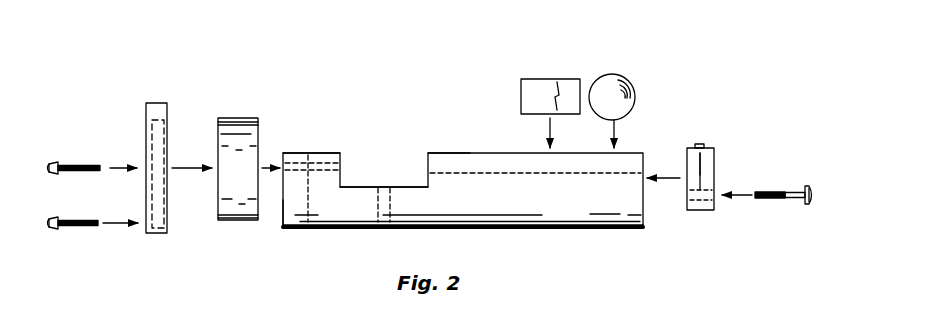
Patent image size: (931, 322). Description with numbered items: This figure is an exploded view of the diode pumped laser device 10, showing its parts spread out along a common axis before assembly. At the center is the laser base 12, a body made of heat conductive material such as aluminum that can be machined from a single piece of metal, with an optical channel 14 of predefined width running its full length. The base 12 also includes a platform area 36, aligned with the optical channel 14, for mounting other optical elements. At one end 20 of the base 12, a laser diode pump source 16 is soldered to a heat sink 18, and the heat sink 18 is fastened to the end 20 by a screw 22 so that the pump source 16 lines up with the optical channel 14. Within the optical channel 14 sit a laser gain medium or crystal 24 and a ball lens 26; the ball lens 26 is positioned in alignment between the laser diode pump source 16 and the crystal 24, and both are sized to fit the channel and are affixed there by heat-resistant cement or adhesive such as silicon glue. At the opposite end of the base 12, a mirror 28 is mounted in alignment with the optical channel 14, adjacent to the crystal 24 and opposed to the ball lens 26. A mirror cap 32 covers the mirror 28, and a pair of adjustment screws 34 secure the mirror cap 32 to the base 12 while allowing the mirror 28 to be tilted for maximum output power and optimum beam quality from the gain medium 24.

The diode pumped laser device 10 is at (289, 102).
The laser base 12 is at (556, 208).
The optical channel 14 is at (347, 168).
The laser diode pump source 16 is at (705, 134).
The heat sink 18 is at (708, 162).
The end of the base 20 is at (645, 222).
The screw 22 is at (795, 200).
The laser gain medium or crystal 24 is at (541, 90).
The ball lens 26 is at (606, 85).
The mirror 28 is at (244, 195).
The mirror cap 32 is at (157, 100).
The adjustment screws 34 is at (78, 165).
The platform area 36 is at (385, 175).